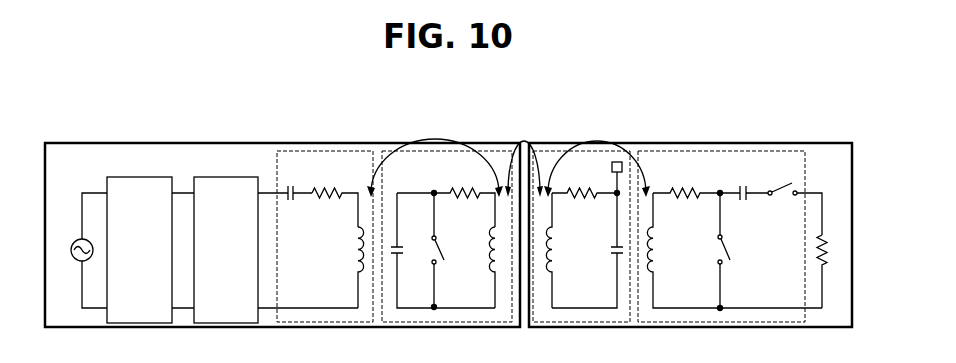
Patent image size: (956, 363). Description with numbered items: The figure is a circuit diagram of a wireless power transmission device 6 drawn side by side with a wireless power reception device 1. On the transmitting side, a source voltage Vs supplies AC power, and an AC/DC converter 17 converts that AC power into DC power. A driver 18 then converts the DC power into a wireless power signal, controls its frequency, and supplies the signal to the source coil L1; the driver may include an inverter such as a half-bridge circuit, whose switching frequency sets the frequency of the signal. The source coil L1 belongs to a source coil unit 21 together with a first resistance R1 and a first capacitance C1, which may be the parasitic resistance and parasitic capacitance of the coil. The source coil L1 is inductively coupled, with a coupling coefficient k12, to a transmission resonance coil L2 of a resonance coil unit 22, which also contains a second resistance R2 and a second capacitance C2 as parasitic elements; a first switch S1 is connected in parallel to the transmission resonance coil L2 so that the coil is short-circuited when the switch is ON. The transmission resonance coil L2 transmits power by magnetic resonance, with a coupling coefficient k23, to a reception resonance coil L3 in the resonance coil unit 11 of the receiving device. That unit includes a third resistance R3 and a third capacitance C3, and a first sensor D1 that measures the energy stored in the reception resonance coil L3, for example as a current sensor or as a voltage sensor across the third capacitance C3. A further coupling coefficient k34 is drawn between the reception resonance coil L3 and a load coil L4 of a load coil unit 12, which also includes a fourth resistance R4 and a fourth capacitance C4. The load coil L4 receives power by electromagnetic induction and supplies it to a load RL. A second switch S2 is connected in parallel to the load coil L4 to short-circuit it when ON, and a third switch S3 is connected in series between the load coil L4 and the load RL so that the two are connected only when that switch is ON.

The wireless power reception device 1 is at (781, 127).
The wireless power transmission device 6 is at (373, 127).
The AC/DC converter 17 is at (141, 177).
The driver 18 is at (230, 177).
The source coil unit 21 is at (329, 150).
The resonance coil unit 22 is at (484, 150).
The resonance coil unit 11 is at (552, 150).
The load coil unit 12 is at (732, 150).
The source voltage Vs is at (78, 250).
The first capacitance C1 is at (296, 183).
The first resistance R1 is at (335, 196).
The source coil L1 is at (351, 267).
The second capacitance C2 is at (443, 250).
The second resistance R2 is at (446, 196).
The transmission resonance coil L2 is at (484, 267).
The first switch S1 is at (448, 250).
The coupling coefficient k12 is at (435, 158).
The coupling coefficient k23 is at (524, 158).
The coupling coefficient between L3 and L4 k34 is at (597, 158).
The third resistance R3 is at (584, 182).
The reception resonance coil L3 is at (560, 250).
The third capacitance C3 is at (587, 250).
The first sensor D1 is at (619, 161).
The fourth resistance R4 is at (696, 182).
The load coil L4 is at (734, 250).
The second switch S2 is at (712, 251).
The fourth capacitance C4 is at (750, 183).
The third switch S3 is at (795, 200).
The load RL is at (833, 271).